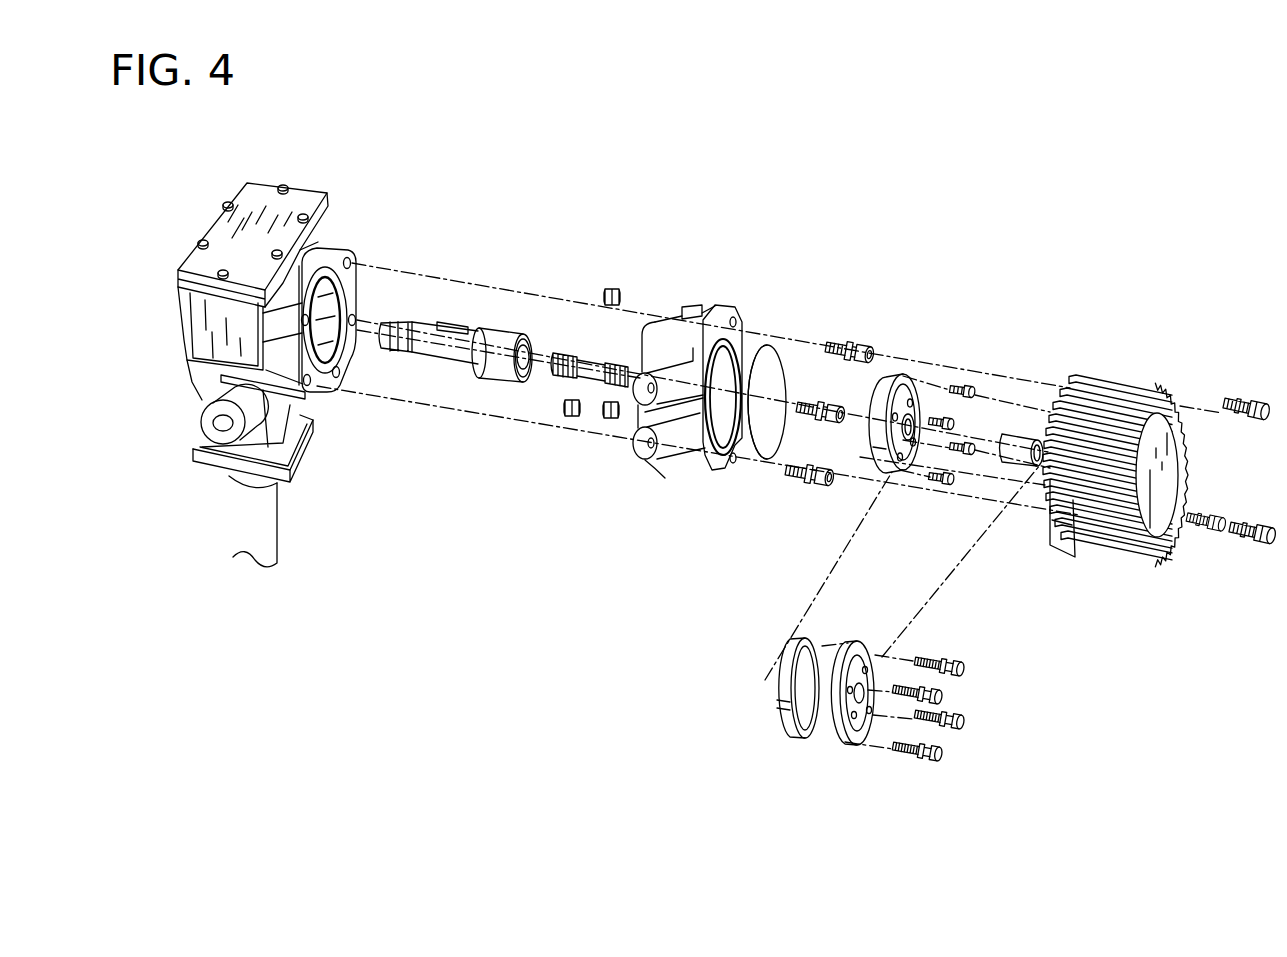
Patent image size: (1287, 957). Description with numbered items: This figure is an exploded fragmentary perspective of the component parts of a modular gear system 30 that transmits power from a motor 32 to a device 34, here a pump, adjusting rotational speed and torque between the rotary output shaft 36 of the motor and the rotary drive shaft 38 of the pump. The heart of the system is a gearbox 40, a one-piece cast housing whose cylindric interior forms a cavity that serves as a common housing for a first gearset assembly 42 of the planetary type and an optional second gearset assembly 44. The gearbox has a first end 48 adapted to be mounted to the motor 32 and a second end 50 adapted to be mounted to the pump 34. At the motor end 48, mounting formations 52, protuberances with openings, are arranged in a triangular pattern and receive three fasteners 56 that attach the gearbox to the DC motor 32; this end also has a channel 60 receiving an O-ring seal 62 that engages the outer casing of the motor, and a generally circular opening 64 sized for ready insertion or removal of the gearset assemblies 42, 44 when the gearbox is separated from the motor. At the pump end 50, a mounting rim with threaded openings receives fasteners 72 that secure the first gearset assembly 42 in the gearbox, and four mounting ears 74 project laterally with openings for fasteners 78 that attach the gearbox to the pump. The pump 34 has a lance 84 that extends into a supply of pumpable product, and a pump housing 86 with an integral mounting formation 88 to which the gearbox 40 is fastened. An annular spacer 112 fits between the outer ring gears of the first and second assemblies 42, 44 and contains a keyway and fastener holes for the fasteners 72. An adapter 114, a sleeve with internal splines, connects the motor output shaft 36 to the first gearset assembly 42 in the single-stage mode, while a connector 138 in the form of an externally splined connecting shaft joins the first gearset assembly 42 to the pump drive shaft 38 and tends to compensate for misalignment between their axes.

The modular gear system 30 is at (883, 308).
The motor 32 is at (1115, 434).
The device (pump) 34 is at (305, 192).
The rotary output shaft 36 is at (1047, 455).
The rotary drive shaft 38 is at (462, 362).
The gearbox 40 is at (672, 453).
The first gearset assembly 42 is at (882, 478).
The second gearset assembly 44 is at (855, 745).
The first end (motor end) 48 is at (748, 330).
The second end (pump end) 50 is at (671, 384).
The mounting formations 52 is at (727, 386).
The fasteners 56 is at (1255, 403).
The channel 60 is at (705, 468).
The O-ring seal 62 is at (809, 344).
The circular opening 64 is at (782, 338).
The fasteners 72 is at (963, 388).
The mounting ears 74 is at (640, 460).
The fasteners 78 is at (870, 353).
The lance 84 is at (233, 520).
The pump housing 86 is at (313, 403).
The integral mounting formation 88 is at (357, 256).
The annular spacer 112 is at (790, 740).
The adapter 114 is at (1012, 470).
The connector (connecting shaft) 138 is at (580, 335).